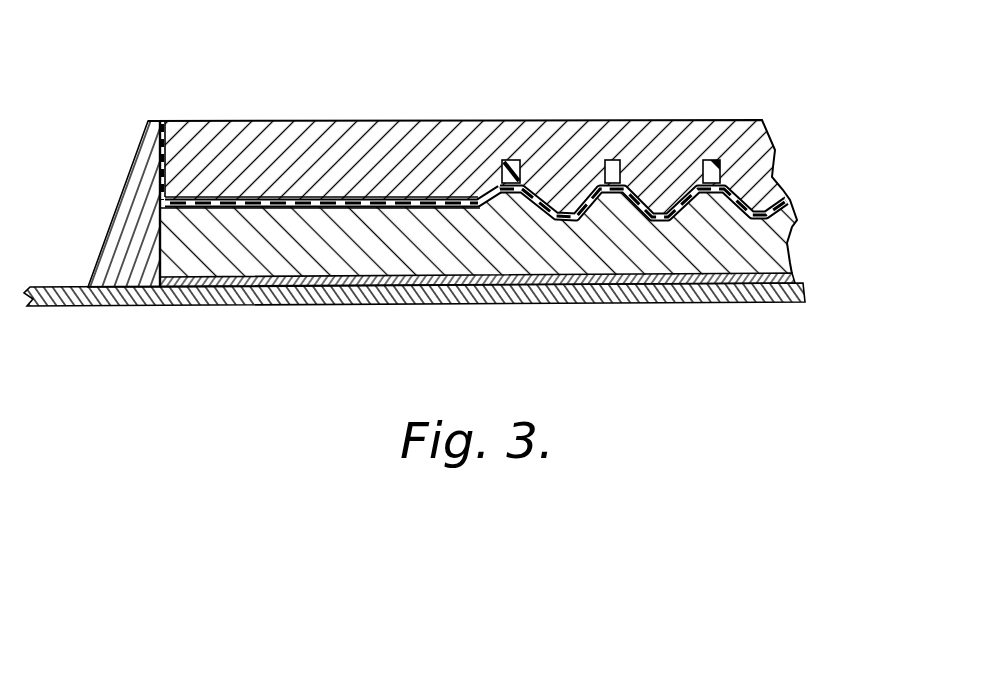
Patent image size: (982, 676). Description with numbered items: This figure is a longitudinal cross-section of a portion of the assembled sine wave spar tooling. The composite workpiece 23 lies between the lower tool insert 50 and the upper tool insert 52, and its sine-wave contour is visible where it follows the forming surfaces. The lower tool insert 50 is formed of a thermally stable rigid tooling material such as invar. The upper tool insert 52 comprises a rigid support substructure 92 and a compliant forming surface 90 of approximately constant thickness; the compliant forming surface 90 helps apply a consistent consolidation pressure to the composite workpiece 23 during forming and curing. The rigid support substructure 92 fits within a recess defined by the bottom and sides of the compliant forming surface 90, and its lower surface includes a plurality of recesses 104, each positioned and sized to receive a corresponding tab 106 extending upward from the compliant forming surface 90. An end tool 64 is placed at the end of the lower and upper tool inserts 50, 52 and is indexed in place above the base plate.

The composite workpiece 23 is at (786, 204).
The lower tool insert 50 is at (243, 258).
The upper tool insert 52 is at (724, 98).
The end tool 64 is at (137, 227).
The compliant forming surface 90 is at (265, 197).
The rigid support substructure 92 is at (455, 133).
The recess 104 is at (518, 165).
The tab 106 is at (510, 160).